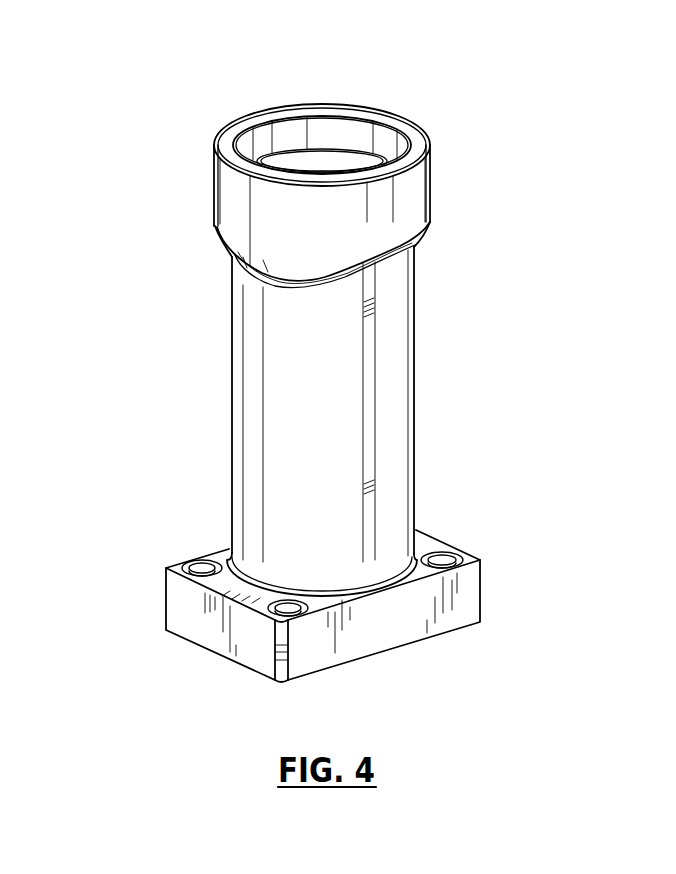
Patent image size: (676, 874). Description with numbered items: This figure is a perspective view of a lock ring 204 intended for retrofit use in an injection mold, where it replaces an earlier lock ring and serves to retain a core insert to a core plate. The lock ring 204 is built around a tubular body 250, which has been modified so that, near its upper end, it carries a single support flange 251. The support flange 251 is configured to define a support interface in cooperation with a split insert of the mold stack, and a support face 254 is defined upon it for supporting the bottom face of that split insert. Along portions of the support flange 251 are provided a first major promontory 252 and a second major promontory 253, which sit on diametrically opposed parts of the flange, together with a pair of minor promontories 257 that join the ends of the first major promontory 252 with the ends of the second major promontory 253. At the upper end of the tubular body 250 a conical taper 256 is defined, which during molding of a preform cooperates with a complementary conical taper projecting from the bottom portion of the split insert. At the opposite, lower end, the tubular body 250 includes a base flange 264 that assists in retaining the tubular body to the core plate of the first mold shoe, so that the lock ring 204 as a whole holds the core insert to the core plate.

The lock ring 204 is at (626, 483).
The tubular body 250 is at (402, 380).
The support flange 251 is at (110, 190).
The first major promontory 252 is at (217, 200).
The second major promontory 253 is at (430, 188).
The support face 254 is at (387, 117).
The conical taper 256 is at (334, 130).
The minor promontories 257 is at (378, 236).
The base flange 264 is at (470, 595).